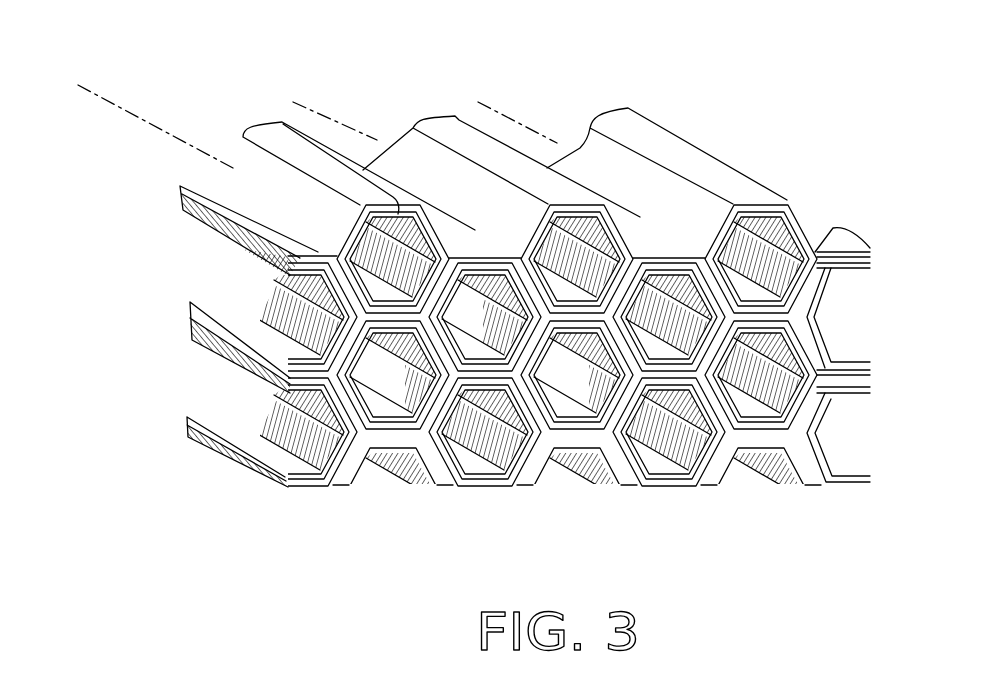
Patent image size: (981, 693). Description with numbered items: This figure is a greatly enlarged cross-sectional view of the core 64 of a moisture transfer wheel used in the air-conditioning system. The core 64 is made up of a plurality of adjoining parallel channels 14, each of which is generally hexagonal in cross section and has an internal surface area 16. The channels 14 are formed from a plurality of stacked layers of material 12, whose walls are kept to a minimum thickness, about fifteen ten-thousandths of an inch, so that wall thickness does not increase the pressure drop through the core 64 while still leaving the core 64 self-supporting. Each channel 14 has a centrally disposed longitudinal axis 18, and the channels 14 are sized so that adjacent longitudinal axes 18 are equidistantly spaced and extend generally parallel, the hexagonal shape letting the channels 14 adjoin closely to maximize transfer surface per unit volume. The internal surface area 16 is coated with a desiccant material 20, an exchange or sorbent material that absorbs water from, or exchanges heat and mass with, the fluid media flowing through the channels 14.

The layers of material 12 is at (526, 312).
The channels 14 is at (400, 377).
The internal surface area 16 is at (457, 115).
The longitudinal axis 18 is at (149, 110).
The desiccant material 20 is at (283, 122).
The core 64 is at (662, 96).